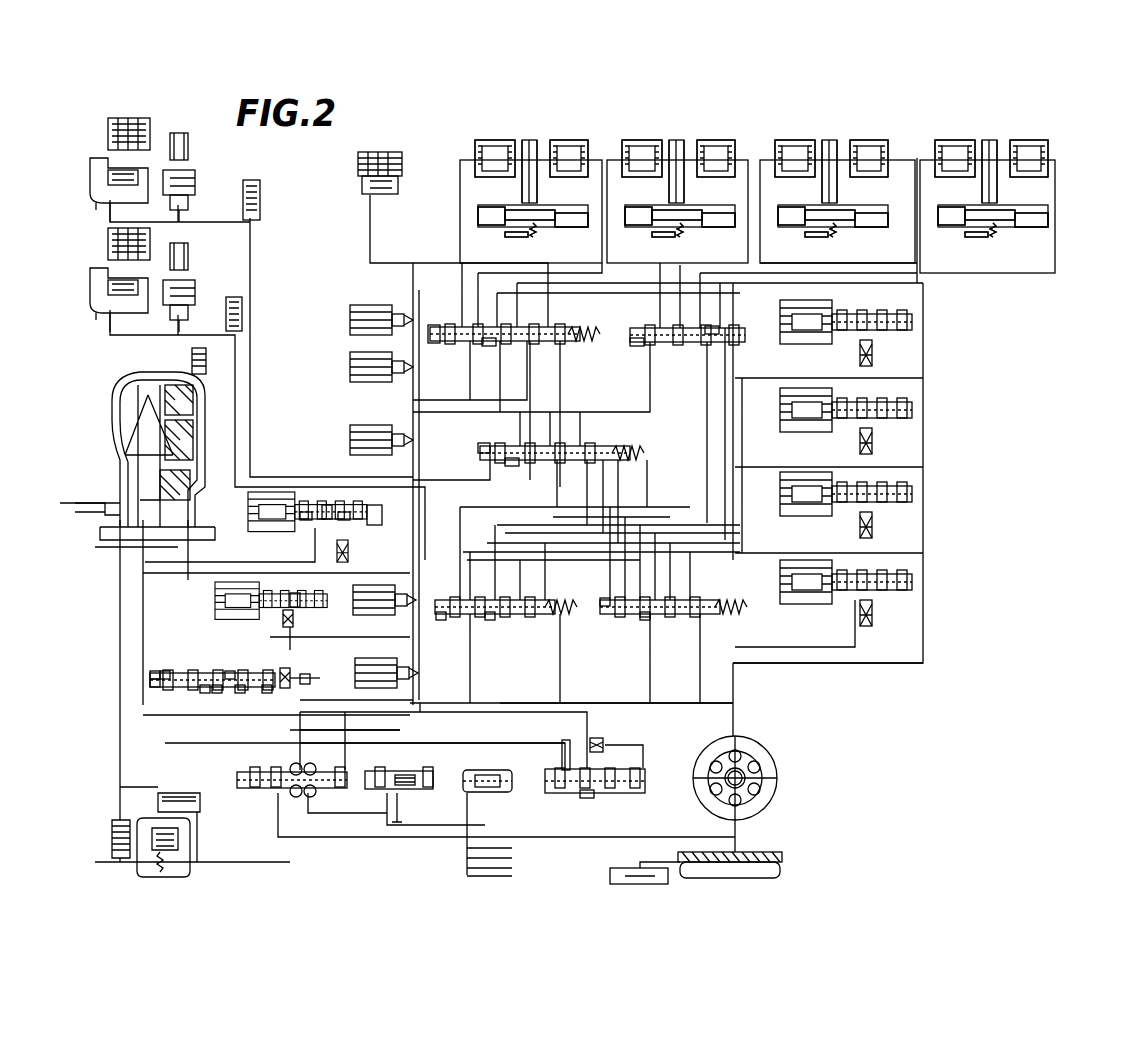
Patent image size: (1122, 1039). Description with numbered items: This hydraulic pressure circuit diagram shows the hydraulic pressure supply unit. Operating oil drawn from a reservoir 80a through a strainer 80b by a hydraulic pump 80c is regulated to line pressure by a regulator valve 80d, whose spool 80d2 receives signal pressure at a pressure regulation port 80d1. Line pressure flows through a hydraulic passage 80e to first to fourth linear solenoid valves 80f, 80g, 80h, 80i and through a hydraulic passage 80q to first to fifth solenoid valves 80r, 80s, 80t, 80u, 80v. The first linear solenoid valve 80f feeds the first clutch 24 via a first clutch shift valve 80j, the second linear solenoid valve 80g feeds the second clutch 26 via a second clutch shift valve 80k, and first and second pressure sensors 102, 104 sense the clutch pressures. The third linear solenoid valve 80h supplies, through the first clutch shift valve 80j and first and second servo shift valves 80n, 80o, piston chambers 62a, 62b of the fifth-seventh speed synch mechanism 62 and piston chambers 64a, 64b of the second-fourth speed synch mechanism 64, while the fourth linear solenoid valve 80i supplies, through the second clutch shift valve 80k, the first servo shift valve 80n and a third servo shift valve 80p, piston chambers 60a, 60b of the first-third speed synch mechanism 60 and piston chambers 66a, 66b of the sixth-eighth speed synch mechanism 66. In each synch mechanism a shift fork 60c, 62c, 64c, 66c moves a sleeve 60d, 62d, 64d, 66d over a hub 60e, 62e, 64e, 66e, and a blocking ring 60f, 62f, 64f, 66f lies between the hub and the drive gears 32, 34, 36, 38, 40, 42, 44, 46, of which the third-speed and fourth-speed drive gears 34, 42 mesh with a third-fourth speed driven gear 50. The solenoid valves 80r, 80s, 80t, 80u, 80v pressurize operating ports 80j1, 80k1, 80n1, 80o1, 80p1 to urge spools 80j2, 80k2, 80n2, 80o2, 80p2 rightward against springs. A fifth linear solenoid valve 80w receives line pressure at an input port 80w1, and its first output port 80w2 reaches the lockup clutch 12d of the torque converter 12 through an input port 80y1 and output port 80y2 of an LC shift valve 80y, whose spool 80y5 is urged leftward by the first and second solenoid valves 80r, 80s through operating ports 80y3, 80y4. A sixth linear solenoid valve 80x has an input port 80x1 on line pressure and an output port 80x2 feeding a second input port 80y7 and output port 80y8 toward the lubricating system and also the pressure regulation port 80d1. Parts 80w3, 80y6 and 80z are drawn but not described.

The first clutch 24 is at (140, 148).
The second clutch 26 is at (140, 258).
The first pressure sensor 102 is at (262, 200).
The second pressure sensor 104 is at (228, 302).
The torque converter 12 is at (119, 383).
The lockup clutch 12d is at (198, 372).
The third-fourth speed driven gear 50 is at (378, 152).
The first-third speed synch mechanism 60 is at (540, 254).
The first-speed piston chamber 60a is at (568, 140).
The third-speed piston chamber 60b is at (478, 175).
The shift fork 60c is at (522, 190).
The sleeve 60d is at (545, 207).
The hub 60e is at (533, 240).
The blocking ring 60f is at (512, 237).
The third-speed drive gear 34 is at (478, 220).
The first-speed drive gear 32 is at (560, 215).
The sixth-eighth speed synch mechanism 66 is at (708, 250).
The sixth-speed piston chamber 66a is at (727, 140).
The eighth-speed piston chamber 66b is at (630, 155).
The shift fork 66c is at (669, 152).
The sleeve 66d is at (692, 208).
The hub 66e is at (678, 240).
The blocking ring 66f is at (655, 232).
The eighth-speed drive gear 46 is at (650, 205).
The sixth-speed drive gear 44 is at (718, 228).
The second-fourth speed synch mechanism 64 is at (812, 251).
The second-speed piston chamber 64a is at (880, 140).
The fourth-speed piston chamber 64b is at (782, 155).
The shift fork 64c is at (822, 192).
The sleeve 64d is at (848, 207).
The hub 64e is at (836, 240).
The blocking ring 64f is at (820, 238).
The fourth-speed drive gear 42 is at (785, 226).
The second-speed drive gear 40 is at (858, 220).
The fifth-seventh speed synch mechanism 62 is at (972, 252).
The fifth-speed piston chamber 62a is at (1028, 140).
The seventh-speed piston chamber 62b is at (940, 155).
The shift fork 62c is at (982, 150).
The sleeve 62d is at (1000, 208).
The hub 62e is at (996, 240).
The blocking ring 62f is at (978, 238).
The seventh-speed drive gear 38 is at (958, 210).
The fifth-speed drive gear 36 is at (1025, 215).
The fifth solenoid valve 80v is at (350, 323).
The fourth solenoid valve 80u is at (350, 370).
The third solenoid valve 80t is at (350, 443).
The second solenoid valve 80s is at (358, 602).
The first solenoid valve 80r is at (358, 675).
The third servo shift valve 80p is at (435, 343).
The operating port 80p1 is at (432, 326).
The spool 80p2 is at (488, 347).
The second servo shift valve 80o is at (633, 330).
The operating port 80o1 is at (635, 346).
The spool 80o2 is at (712, 328).
The first servo shift valve 80n is at (474, 455).
The operating port 80n1 is at (482, 446).
The spool 80n2 is at (512, 462).
The fifth linear solenoid valve 80w is at (240, 522).
The input port 80w1 is at (344, 522).
The first output port 80w2 is at (327, 505).
The valve body 80w3 is at (305, 522).
The sixth linear solenoid valve 80x is at (213, 589).
The input port 80x1 is at (290, 605).
The output port 80x2 is at (318, 614).
The LC shift valve 80y is at (144, 683).
The input port 80y1 is at (160, 673).
The output port 80y2 is at (170, 673).
The operating port 80y3 is at (267, 693).
The operating port 80y4 is at (240, 695).
The spool 80y5 is at (155, 679).
The port 80y6 is at (205, 693).
The second input port 80y7 is at (232, 673).
The output port 80y8 is at (215, 695).
The second clutch shift valve 80k is at (436, 597).
The operating port 80k1 is at (440, 618).
The spool 80k2 is at (490, 618).
The first clutch shift valve 80j is at (597, 611).
The operating port 80j1 is at (608, 600).
The spool 80j2 is at (640, 618).
The fourth linear solenoid valve 80i is at (782, 330).
The third linear solenoid valve 80h is at (782, 418).
The second linear solenoid valve 80g is at (782, 500).
The first linear solenoid valve 80f is at (782, 588).
The hydraulic passage 80e is at (757, 670).
The hydraulic passage 80q is at (604, 703).
The relief valve 80z is at (237, 780).
The regulator valve 80d is at (543, 786).
The pressure regulation port 80d1 is at (562, 770).
The spool 80d2 is at (588, 796).
The hydraulic pump 80c is at (706, 762).
The reservoir 80a is at (622, 868).
The strainer 80b is at (782, 862).